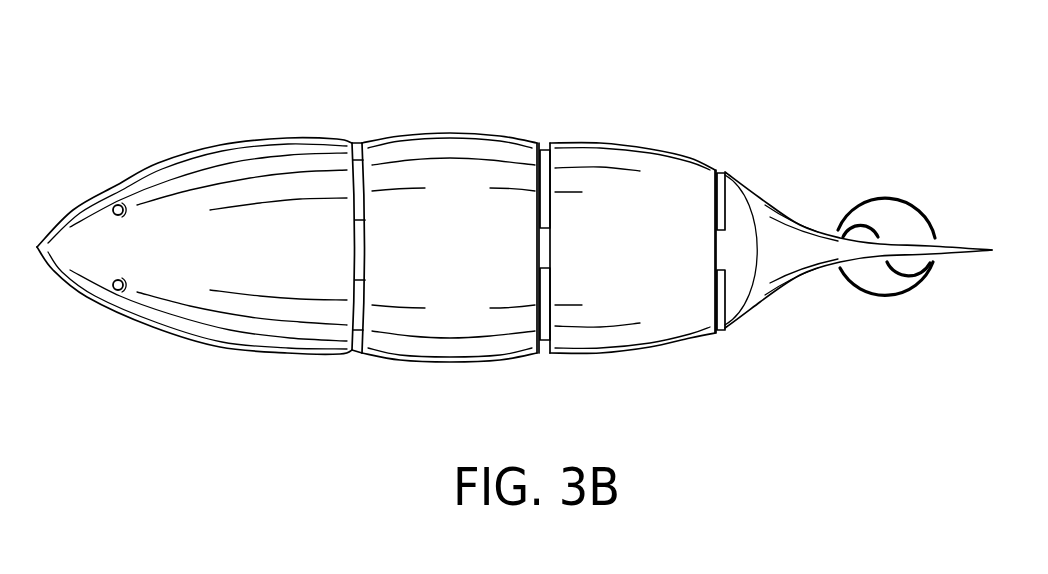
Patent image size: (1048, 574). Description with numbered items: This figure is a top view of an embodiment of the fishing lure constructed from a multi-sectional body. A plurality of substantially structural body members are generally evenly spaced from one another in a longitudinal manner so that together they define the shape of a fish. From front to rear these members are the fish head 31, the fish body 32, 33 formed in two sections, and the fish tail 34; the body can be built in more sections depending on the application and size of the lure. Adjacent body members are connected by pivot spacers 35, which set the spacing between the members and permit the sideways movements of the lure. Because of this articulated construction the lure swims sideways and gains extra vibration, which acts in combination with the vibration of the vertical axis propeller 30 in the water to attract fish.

The vertical axis propeller 30 is at (933, 262).
The fish head 31 is at (158, 163).
The fish body 32 is at (447, 130).
The fish body 33 is at (657, 146).
The fish tail 34 is at (953, 248).
The pivot spacer 35 is at (355, 145).